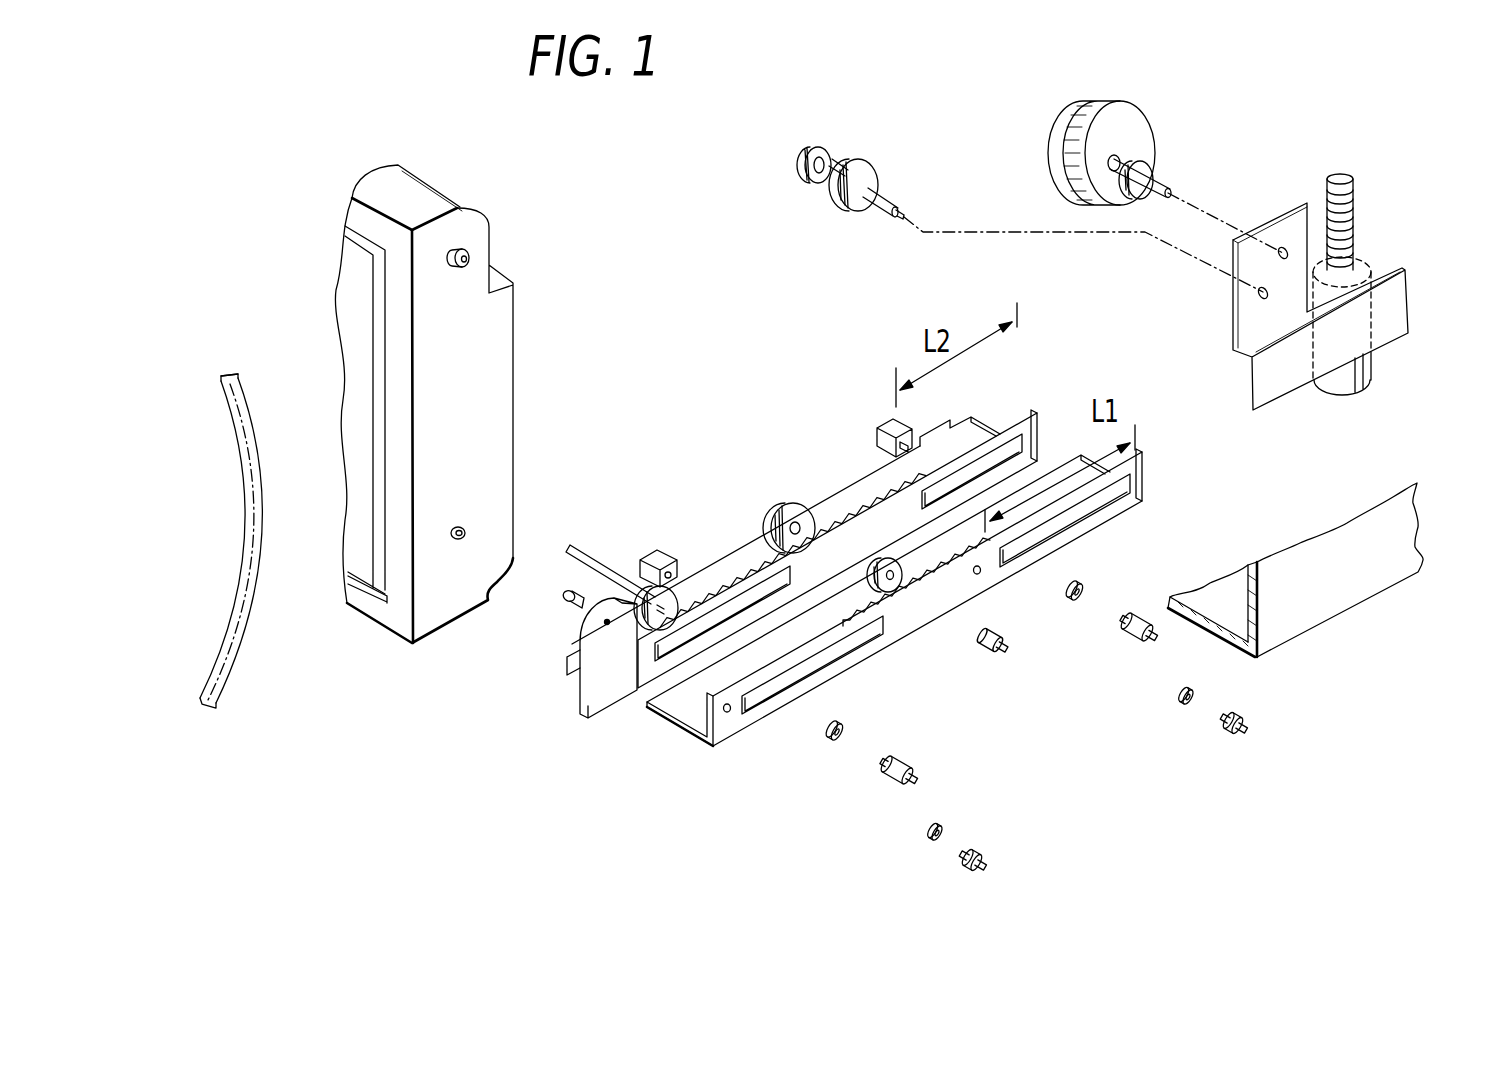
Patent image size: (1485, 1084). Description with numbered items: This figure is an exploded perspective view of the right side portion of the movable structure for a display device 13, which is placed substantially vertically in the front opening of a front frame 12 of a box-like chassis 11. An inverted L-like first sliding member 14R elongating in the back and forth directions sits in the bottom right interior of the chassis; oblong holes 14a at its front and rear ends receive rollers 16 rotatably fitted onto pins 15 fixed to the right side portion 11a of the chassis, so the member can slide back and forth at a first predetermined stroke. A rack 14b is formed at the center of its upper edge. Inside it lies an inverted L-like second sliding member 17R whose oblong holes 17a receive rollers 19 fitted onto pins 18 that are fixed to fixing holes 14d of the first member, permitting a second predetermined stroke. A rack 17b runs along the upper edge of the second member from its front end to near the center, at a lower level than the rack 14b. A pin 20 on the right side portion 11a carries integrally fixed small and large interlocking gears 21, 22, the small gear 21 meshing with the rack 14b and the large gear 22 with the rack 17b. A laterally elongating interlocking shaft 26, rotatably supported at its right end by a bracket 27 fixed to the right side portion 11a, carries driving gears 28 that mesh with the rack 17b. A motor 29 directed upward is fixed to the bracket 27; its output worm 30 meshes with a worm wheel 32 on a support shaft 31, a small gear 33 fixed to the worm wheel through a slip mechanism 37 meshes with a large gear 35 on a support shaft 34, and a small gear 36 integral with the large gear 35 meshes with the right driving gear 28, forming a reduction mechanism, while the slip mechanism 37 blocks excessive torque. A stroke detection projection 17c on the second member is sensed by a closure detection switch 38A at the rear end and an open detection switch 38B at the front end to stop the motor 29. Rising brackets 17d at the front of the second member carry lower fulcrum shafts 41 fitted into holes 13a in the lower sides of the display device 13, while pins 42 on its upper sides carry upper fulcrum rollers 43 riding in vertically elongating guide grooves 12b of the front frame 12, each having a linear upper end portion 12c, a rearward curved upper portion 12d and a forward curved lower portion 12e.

The chassis 11 is at (1295, 566).
The right side portion of the chassis 11a is at (1323, 540).
The front frame 12 is at (400, 622).
The guide grooves 12b is at (258, 608).
The upper end portion of the guide groove 12c is at (235, 393).
The upper portion of the guide groove 12d is at (257, 524).
The lower portion of the guide groove 12e is at (222, 688).
The display device 13 is at (348, 315).
The holes 13a is at (458, 528).
The first sliding member 14R is at (907, 632).
The oblong holes 14a is at (1105, 495).
The rack 14b is at (915, 590).
The fixing holes 14d is at (980, 572).
The pins 15 is at (1125, 630).
The rollers 16 is at (1080, 585).
The second sliding member 17R is at (802, 548).
The oblong holes 17a is at (1000, 450).
The rack 17b is at (845, 520).
The stroke detection projection 17c is at (920, 440).
The rising brackets 17d is at (580, 705).
The pins 18 is at (1225, 730).
The rollers 19 is at (1180, 697).
The pin 20 is at (988, 650).
The small interlocking gear 21 is at (920, 572).
The large interlocking gear 22 is at (795, 510).
The interlocking shaft 26 is at (590, 548).
The bracket 27 is at (1400, 328).
The driving gears 28 is at (655, 610).
The motor 29 is at (1375, 375).
The output worm 30 is at (1350, 195).
The support shaft 31 is at (1167, 188).
The worm wheel 32 is at (1103, 128).
The small gear 33 is at (1150, 165).
The support shaft 34 is at (888, 205).
The large gear 35 is at (862, 165).
The small gear 36 is at (827, 150).
The slip mechanism 37 is at (1075, 137).
The closure detection switch 38A is at (890, 430).
The open detection switch 38B is at (660, 558).
The lower fulcrum shafts 41 is at (566, 598).
The pins 42 is at (473, 258).
The upper fulcrum rollers 43 is at (460, 250).